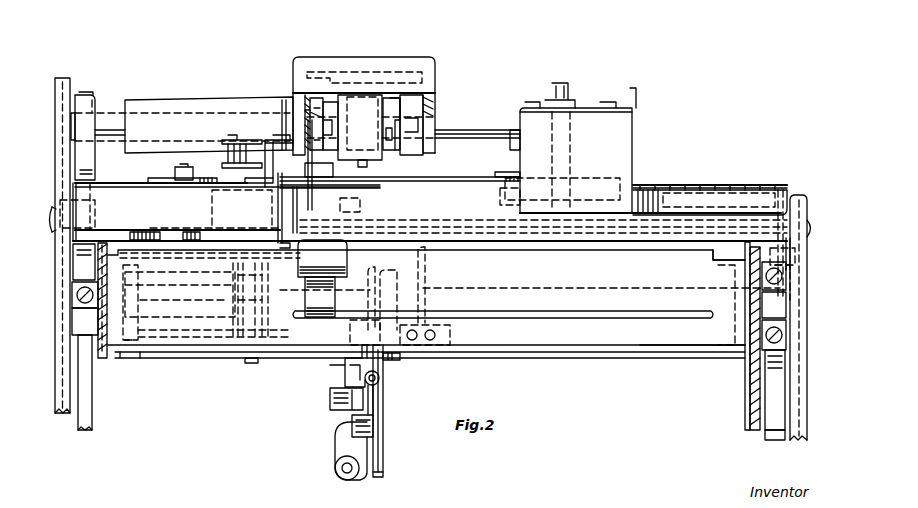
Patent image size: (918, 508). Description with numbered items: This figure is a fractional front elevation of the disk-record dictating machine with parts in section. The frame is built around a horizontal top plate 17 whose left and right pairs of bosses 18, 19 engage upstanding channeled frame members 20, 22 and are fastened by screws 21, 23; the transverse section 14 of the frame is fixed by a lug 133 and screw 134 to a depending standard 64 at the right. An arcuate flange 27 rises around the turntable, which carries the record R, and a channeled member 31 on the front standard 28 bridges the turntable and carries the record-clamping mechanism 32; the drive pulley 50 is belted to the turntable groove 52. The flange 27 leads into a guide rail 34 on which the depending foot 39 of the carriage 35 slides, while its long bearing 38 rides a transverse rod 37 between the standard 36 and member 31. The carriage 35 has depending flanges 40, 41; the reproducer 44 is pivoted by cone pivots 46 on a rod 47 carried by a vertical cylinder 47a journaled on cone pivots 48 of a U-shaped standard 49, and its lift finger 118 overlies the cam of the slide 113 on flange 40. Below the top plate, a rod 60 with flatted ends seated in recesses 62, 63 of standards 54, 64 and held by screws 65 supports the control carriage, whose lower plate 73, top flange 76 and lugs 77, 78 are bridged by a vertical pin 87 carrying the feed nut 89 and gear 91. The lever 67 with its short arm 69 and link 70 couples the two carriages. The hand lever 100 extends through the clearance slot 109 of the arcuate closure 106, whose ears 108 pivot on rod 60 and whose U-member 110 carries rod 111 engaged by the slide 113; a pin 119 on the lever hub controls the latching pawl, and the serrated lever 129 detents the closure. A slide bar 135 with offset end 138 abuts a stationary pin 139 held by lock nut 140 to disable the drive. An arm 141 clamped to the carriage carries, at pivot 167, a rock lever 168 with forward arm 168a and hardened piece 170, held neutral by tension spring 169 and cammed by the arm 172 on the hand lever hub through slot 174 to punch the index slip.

The transverse section of the frame 14 is at (752, 398).
The horizontal top plate 17 is at (720, 196).
The pair of laterally-projecting bosses 18 is at (88, 205).
The pair of laterally-projecting bosses 19 is at (795, 240).
The upstanding channeled frame member 20 is at (70, 80).
The screws 21 is at (52, 232).
The upstanding channeled frame member 22 is at (798, 440).
The screws 23 is at (810, 222).
The arcuate flange 27 is at (802, 195).
The front standard 28 is at (622, 132).
The channeled member 31 is at (636, 110).
The record-clamping mechanism 32 is at (503, 172).
The transverse rectilinear guide rail 34 is at (112, 190).
The carriage 35 is at (445, 60).
The standard 36 is at (80, 95).
The transverse rod 37 is at (96, 100).
The long bearing 38 is at (150, 100).
The depending foot 39 is at (242, 210).
The depending flange 40 is at (324, 112).
The depending flange 41 is at (440, 130).
The reproducing-type translating device 44 is at (392, 98).
The cone pivots 46 is at (312, 110).
The transverse rod 47 is at (425, 112).
The vertical cylinder 47a is at (312, 118).
The cone pivots 48 is at (360, 95).
The U-shaped standard 49 is at (410, 183).
The drive pulley 50 is at (162, 178).
The groove 52 is at (339, 188).
The standard 54 is at (92, 412).
The rod 60 is at (540, 290).
The rectangular recess 62 is at (85, 276).
The rectangular recess 63 is at (773, 277).
The depending standard 64 is at (778, 440).
The screws 65 is at (429, 313).
The lever 67 is at (348, 260).
The short horizontal lever arm 69 is at (225, 165).
The short link 70 is at (268, 140).
The lower horizontal plate 73 is at (400, 362).
The top flange 76 is at (170, 272).
The forwardly-extending lug 77 is at (130, 338).
The forwardly-extending lug 78 is at (395, 280).
The vertical pin 87 is at (252, 364).
The circular feed nut 89 is at (232, 296).
The gear 91 is at (172, 360).
The hand lever 100 is at (321, 297).
The closure 106 is at (669, 357).
The rearwardly-extending apertured ears 108 is at (725, 350).
The clearance slot 109 is at (545, 318).
The upstanding U-member 110 is at (278, 205).
The transverse rod 111 is at (296, 195).
The slide 113 is at (283, 105).
The lift finger 118 is at (308, 112).
The pin 119 is at (330, 370).
The lever 129 is at (738, 262).
The lug 133 is at (775, 335).
The screw 134 is at (770, 400).
The slide bar 135 is at (444, 334).
The offset right end portion 138 is at (426, 270).
The stationary pin 139 is at (792, 285).
The lock nut 140 is at (798, 262).
The arm 141 is at (380, 378).
The pivot 167 is at (378, 434).
The rock lever 168 is at (384, 443).
The forwardly-extending arm 168a is at (340, 442).
The tension spring 169 is at (375, 392).
The hardened piece 170 is at (336, 476).
The arm 172 is at (338, 412).
The slot 174 is at (345, 385).
The record R is at (757, 179).